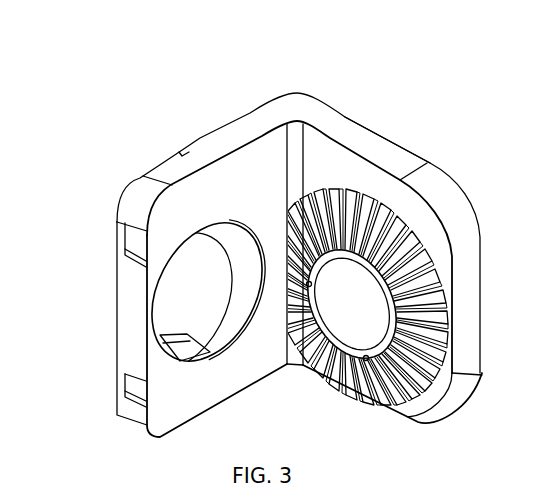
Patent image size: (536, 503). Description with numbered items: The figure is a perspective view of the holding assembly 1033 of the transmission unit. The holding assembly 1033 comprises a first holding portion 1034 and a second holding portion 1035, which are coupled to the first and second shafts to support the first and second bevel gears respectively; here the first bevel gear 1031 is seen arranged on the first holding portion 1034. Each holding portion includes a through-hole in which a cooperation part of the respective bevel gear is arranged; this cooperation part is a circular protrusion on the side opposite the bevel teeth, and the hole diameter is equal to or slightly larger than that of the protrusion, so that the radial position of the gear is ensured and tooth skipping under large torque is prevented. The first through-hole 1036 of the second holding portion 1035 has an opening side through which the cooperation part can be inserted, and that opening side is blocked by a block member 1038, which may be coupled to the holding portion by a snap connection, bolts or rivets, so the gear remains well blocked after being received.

The first bevel gear 1031 is at (383, 362).
The holding assembly 1033 is at (311, 45).
The first holding portion 1034 is at (373, 148).
The second holding portion 1035 is at (225, 152).
The first through-hole 1036 is at (194, 288).
The block member 1038 is at (132, 313).